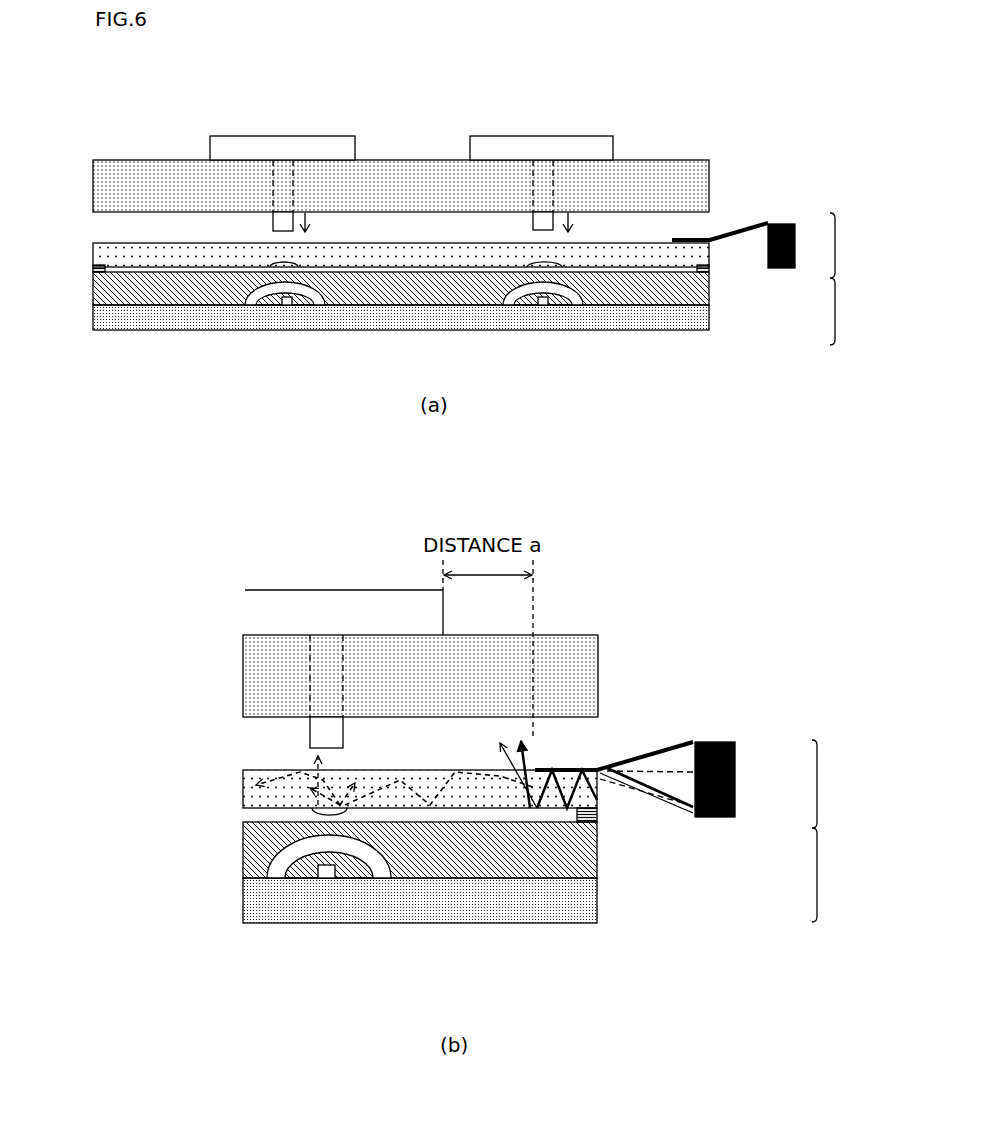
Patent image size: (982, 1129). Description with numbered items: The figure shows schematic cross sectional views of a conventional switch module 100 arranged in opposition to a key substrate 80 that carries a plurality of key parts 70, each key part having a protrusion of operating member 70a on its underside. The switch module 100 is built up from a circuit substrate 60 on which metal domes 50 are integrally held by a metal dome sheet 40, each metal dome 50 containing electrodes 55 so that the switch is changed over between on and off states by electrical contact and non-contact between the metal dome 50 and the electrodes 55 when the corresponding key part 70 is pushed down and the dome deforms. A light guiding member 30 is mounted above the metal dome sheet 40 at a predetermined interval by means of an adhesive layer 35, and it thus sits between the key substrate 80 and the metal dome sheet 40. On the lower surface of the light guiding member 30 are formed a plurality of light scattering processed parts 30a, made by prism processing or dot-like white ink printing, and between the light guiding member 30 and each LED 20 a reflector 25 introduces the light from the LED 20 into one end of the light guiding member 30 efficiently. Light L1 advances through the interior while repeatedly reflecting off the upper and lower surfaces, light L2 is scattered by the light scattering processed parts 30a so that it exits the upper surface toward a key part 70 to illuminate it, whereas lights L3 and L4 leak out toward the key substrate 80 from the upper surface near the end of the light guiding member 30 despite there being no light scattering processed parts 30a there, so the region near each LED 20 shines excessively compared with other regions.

The LED 20 is at (781, 224).
The reflector 25 is at (742, 224).
The light guiding member 30 is at (93, 250).
The light scattering processed parts 30a is at (243, 268).
The adhesive layer 35 is at (93, 268).
The metal dome sheet 40 is at (707, 293).
The metal dome 50 is at (255, 295).
The electrodes 55 is at (287, 305).
The circuit substrate 60 is at (698, 325).
The key part 70 is at (267, 143).
The protrusion of operating member 70a is at (278, 225).
The key substrate 80 is at (702, 190).
The switch module 100 is at (848, 567).
The light L1 is at (273, 777).
The light L2 is at (397, 788).
The light L3 is at (507, 760).
The light L4 is at (528, 763).